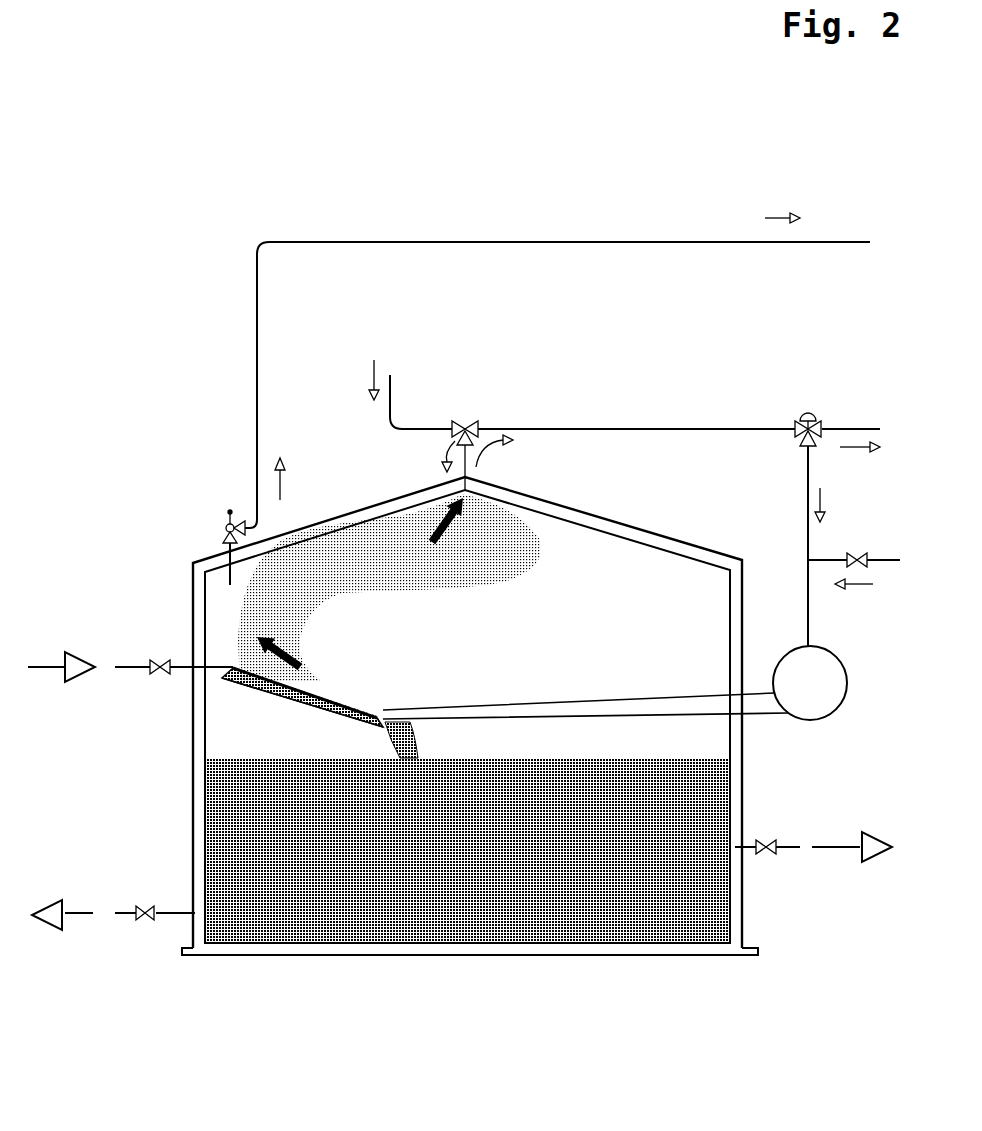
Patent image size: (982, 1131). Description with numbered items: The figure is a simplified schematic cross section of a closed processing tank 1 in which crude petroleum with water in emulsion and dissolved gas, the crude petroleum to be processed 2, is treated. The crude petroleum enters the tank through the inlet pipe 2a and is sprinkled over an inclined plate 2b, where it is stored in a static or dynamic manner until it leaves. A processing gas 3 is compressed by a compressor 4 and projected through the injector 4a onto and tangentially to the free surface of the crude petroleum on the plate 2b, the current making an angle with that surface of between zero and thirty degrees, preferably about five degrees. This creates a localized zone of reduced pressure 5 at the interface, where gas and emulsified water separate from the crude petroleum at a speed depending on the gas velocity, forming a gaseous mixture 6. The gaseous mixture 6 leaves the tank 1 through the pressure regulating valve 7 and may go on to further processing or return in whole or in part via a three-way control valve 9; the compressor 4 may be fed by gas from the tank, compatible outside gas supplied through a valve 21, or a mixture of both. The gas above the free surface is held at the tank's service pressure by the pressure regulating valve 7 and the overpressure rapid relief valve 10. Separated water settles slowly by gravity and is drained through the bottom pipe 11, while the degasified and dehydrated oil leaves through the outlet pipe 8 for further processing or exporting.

The closed processing tank 1 is at (643, 533).
The crude petroleum to be processed 2 is at (190, 665).
The inlet pipe 2a is at (213, 659).
The plate 2b is at (300, 707).
The processing gas 3 is at (358, 707).
The compressor 4 is at (807, 660).
The injector 4a is at (407, 708).
The localized zone of reduced pressure 5 is at (318, 693).
The gaseous mixture 6 is at (295, 635).
The pressure regulating valve 7 is at (582, 425).
The outlet pipe 8 is at (813, 839).
The three-way control valve 9 is at (803, 410).
The overpressure rapid relief valve 10 is at (225, 540).
The bottom pipe 11 is at (152, 903).
The supply valve 21 is at (850, 557).